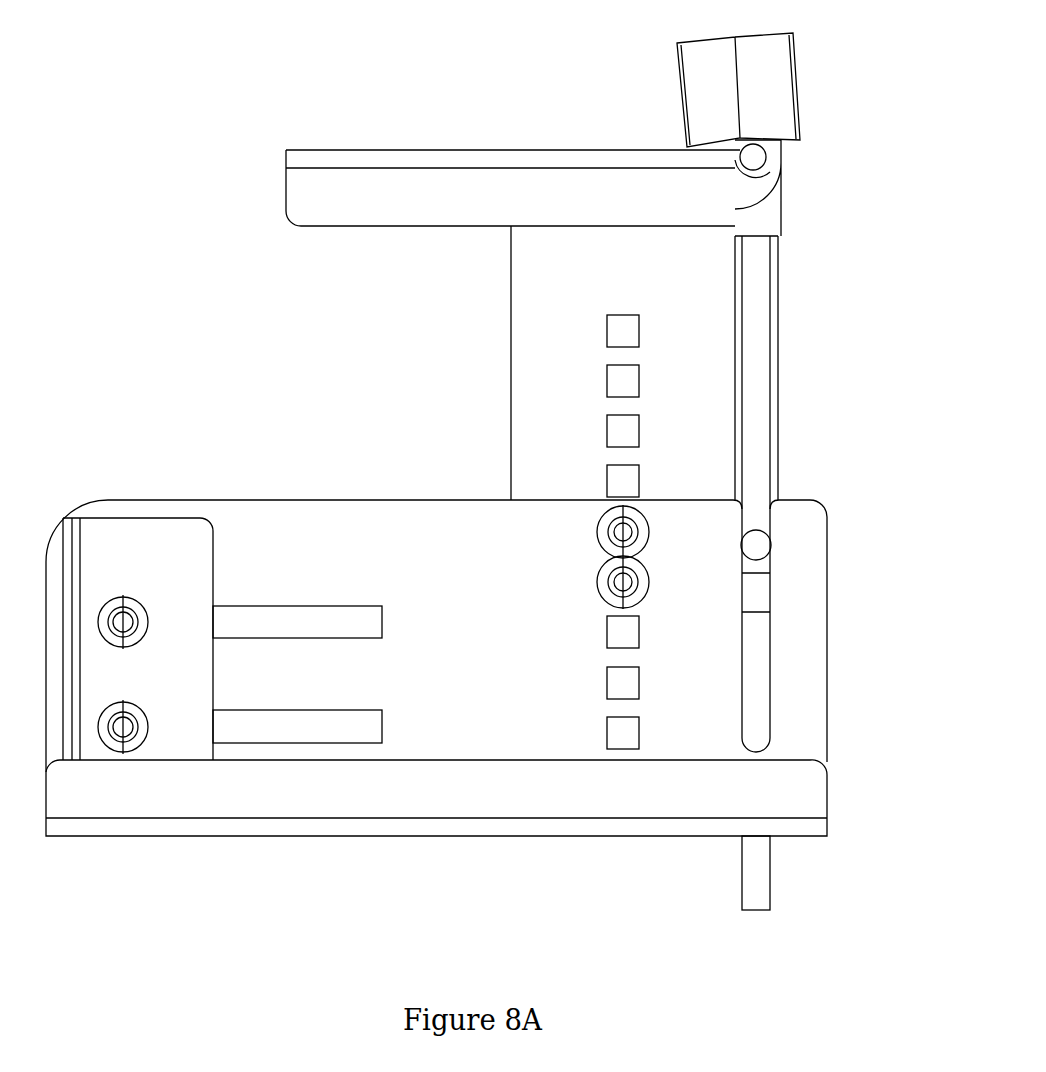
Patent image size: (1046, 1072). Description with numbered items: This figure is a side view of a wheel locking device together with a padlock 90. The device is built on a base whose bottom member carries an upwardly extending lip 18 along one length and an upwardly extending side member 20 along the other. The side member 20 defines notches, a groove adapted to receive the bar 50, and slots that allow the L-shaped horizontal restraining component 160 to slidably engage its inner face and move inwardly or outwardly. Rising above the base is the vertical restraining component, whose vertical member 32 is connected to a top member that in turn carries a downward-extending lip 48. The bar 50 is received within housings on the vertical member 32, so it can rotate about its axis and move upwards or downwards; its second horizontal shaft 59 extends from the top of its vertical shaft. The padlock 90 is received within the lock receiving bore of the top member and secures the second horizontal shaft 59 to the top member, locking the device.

The lip 18 is at (428, 795).
The side member 20 is at (380, 537).
The vertical member 32 is at (530, 328).
The lip 48 is at (396, 192).
The bar 50 is at (755, 361).
The second horizontal shaft 59 is at (757, 158).
The padlock 90 is at (775, 95).
The horizontal restraining component 160 is at (142, 538).